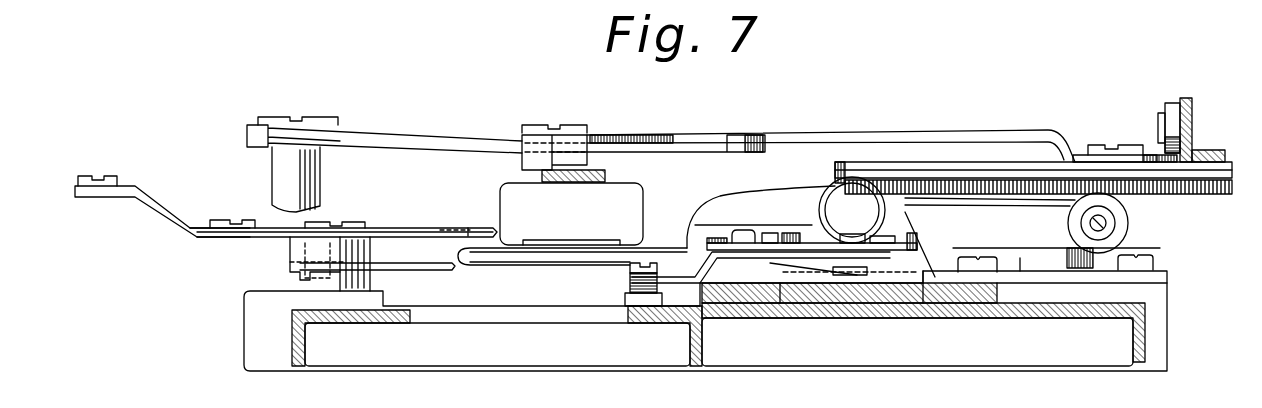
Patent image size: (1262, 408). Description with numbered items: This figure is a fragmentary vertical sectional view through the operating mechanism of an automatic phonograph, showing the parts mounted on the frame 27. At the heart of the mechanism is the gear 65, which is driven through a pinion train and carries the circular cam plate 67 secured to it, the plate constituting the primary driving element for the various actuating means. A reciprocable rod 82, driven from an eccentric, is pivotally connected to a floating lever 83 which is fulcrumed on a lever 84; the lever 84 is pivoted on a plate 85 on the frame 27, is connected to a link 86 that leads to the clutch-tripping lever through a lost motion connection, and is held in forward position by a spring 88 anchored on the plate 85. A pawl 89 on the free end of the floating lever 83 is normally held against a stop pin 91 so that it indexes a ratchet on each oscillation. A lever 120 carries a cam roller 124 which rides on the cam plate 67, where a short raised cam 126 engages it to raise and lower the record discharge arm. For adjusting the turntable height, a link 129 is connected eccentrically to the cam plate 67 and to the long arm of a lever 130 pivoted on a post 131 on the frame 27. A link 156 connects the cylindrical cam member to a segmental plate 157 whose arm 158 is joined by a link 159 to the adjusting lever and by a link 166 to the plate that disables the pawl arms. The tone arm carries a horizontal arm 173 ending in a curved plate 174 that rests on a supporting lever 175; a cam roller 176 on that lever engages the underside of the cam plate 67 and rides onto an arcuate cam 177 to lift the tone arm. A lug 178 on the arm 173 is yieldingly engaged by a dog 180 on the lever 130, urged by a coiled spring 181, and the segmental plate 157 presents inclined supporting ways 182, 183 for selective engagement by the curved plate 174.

The frame 27 is at (1082, 360).
The gear 65 is at (1178, 190).
The circular cam plate 67 is at (920, 165).
The reciprocable rod 82 is at (779, 243).
The floating lever 83 is at (744, 243).
The lever 84 is at (748, 250).
The plate 85 is at (758, 286).
The link 86 is at (629, 277).
The spring 88 is at (792, 273).
The pawl 89 is at (921, 243).
The stop pin 91 is at (888, 231).
The lever 120 is at (1192, 112).
The cam roller 124 is at (1180, 98).
The raised cam 126 is at (1103, 153).
The link 129 is at (902, 130).
The lever 130 is at (452, 140).
The post 131 is at (320, 117).
The link 156 is at (440, 263).
The segmental plate 157 is at (392, 228).
The arm 158 is at (165, 203).
The link 159 is at (120, 183).
The link 166 is at (246, 232).
The horizontal arm 173 is at (606, 177).
The curved plate 174 is at (634, 203).
The supporting lever 175 is at (566, 263).
The cam roller 176 is at (1128, 226).
The arcuate cam 177 is at (979, 200).
The lug 178 is at (580, 138).
The dog 180 is at (636, 148).
The coiled spring 181 is at (633, 143).
The inclined supporting way 182 is at (470, 230).
The inclined supporting way 183 is at (444, 230).